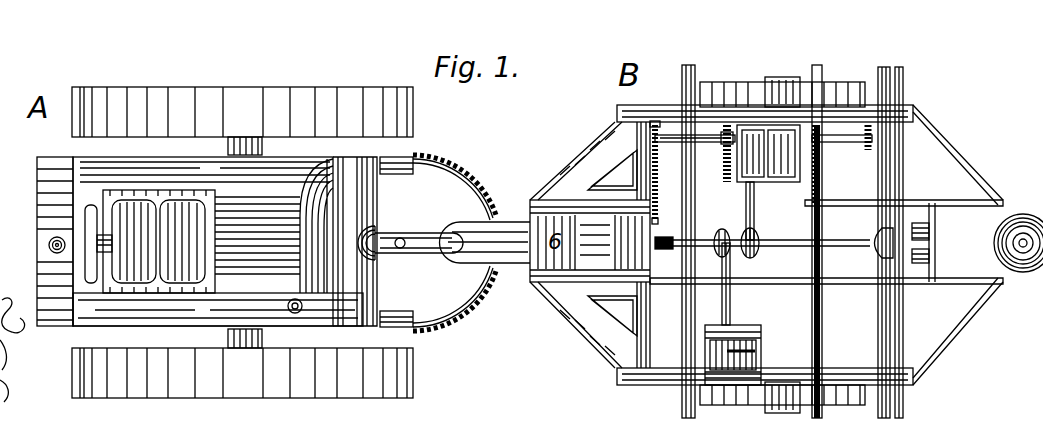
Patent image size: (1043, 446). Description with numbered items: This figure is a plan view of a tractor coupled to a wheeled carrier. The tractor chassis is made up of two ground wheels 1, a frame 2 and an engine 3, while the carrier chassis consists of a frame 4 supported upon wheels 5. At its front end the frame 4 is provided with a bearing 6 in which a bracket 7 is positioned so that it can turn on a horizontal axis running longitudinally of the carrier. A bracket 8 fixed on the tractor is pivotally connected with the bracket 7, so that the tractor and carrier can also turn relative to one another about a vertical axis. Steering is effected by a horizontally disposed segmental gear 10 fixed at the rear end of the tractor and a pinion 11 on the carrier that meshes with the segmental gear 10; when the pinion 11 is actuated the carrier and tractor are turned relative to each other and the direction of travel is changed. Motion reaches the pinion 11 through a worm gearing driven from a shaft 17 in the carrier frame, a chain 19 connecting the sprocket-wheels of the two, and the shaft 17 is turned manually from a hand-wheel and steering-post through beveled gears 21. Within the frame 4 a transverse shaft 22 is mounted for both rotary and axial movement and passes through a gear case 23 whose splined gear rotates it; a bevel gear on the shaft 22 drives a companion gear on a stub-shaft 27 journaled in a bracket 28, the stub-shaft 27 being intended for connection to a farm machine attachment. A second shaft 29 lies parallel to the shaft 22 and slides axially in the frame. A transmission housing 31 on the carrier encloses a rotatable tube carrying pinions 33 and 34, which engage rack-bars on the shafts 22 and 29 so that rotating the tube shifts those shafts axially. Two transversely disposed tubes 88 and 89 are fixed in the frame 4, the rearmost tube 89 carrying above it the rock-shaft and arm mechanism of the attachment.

The ground wheels 1 is at (242, 242).
The frame 2 is at (282, 159).
The engine 3 is at (159, 241).
The frame 4 is at (672, 106).
The wheels 5 is at (853, 83).
The bearing 6 is at (464, 265).
The bracket 7 is at (424, 233).
The bracket 8 is at (381, 257).
The segmental gear 10 is at (446, 163).
The pinion 11 is at (512, 234).
The shaft 17 is at (695, 155).
The chain 19 is at (655, 192).
The beveled gears 21 is at (868, 148).
The transverse shaft 22 is at (722, 297).
The gear case 23 is at (758, 363).
The stub-shaft 27 is at (780, 248).
The bracket 28 is at (720, 234).
The shaft 29 is at (822, 301).
The housing 31 is at (768, 182).
The pinion 33 is at (721, 141).
The pinion 34 is at (819, 141).
The tube 88 is at (681, 393).
The tube 89 is at (882, 338).